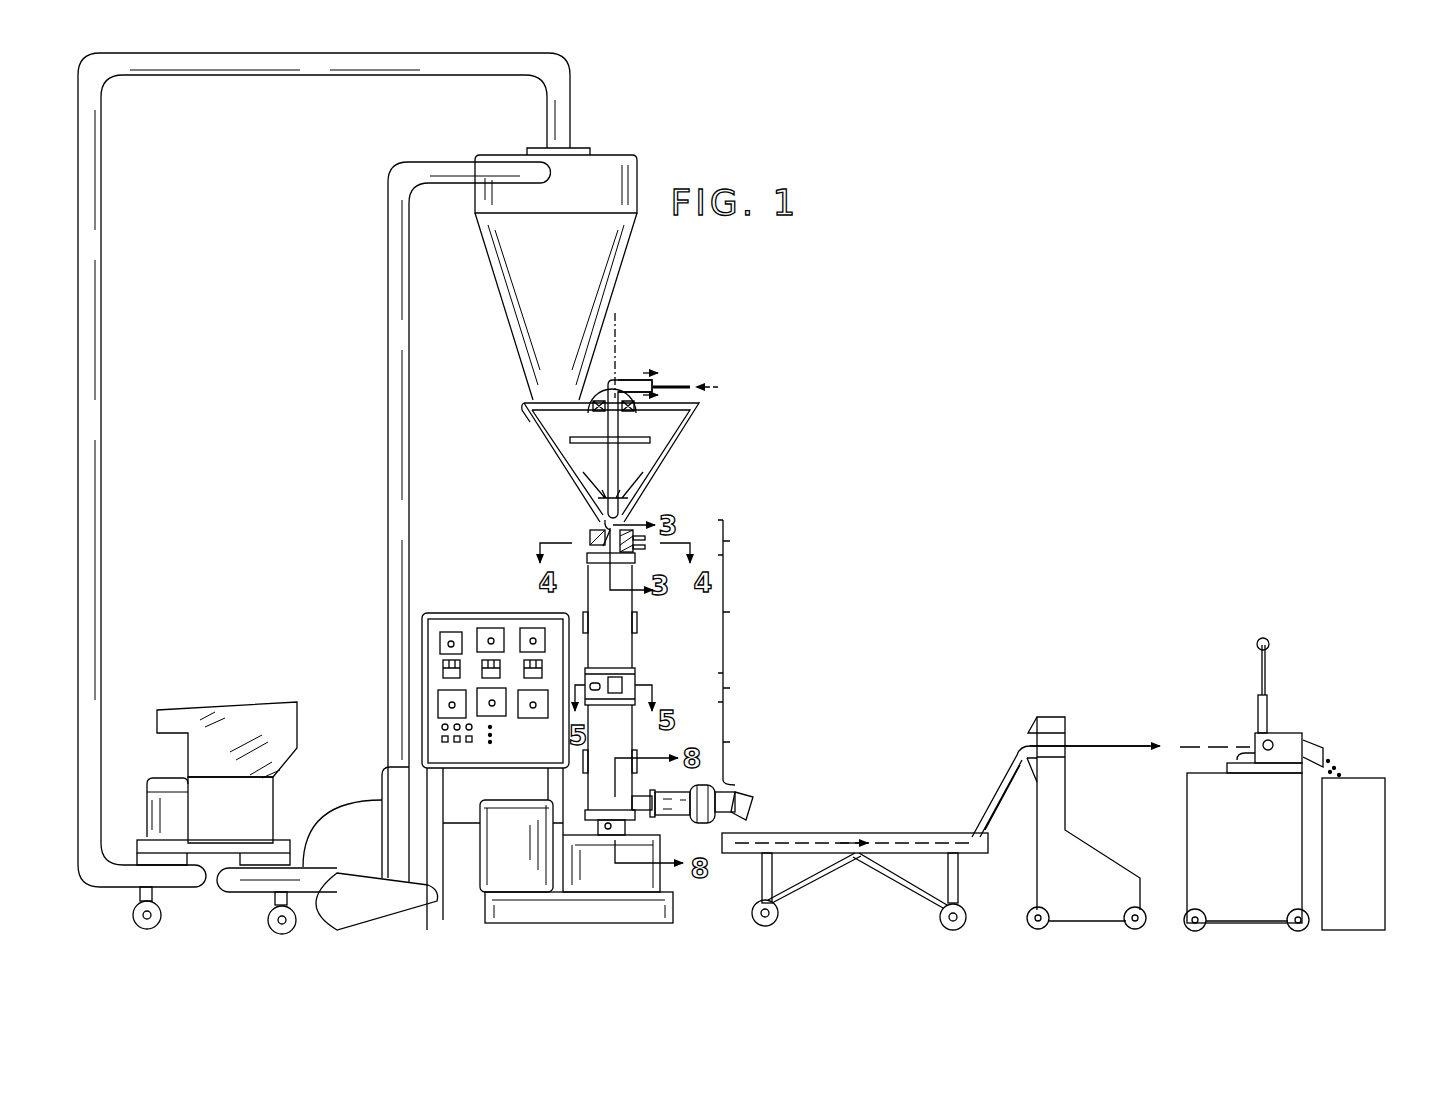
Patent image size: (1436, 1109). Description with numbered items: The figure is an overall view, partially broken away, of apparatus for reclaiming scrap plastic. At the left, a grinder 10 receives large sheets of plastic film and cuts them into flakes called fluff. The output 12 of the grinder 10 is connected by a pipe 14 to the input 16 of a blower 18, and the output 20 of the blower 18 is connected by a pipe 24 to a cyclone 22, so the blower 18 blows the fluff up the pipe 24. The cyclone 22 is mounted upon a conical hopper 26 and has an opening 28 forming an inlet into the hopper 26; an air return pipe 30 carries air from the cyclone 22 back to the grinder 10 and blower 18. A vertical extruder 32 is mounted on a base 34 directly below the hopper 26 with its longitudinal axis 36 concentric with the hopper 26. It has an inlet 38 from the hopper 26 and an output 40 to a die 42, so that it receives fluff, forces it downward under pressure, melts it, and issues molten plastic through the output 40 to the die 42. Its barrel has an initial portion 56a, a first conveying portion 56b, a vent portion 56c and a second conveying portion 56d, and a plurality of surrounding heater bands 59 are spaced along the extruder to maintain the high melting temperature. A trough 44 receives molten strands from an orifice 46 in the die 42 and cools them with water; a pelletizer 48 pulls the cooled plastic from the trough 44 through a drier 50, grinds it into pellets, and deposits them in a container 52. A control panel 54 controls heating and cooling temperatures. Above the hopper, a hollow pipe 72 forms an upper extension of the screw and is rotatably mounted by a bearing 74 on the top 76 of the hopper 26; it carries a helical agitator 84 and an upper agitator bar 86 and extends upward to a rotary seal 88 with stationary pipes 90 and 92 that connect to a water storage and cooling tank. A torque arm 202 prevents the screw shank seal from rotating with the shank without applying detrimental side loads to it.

The grinder 10 is at (230, 703).
The output of grinder 12 is at (237, 852).
The pipe 14 is at (252, 880).
The input of blower 16 is at (350, 908).
The blower 18 is at (325, 814).
The output of blower 20 is at (383, 767).
The cyclone 22 is at (475, 212).
The pipe 24 is at (388, 308).
The conical hopper 26 is at (556, 452).
The opening 28 is at (530, 414).
The air return pipe 30 is at (327, 80).
The vertical extruder 32 is at (646, 661).
The base 34 is at (664, 870).
The longitudinal axis 36 is at (617, 318).
The inlet 38 is at (592, 543).
The output 40 is at (645, 815).
The die 42 is at (680, 793).
The trough 44 is at (812, 833).
The orifice 46 is at (743, 814).
The pelletizer 48 is at (1290, 737).
The drier 50 is at (1055, 717).
The container 52 is at (1368, 778).
The control panel 54 is at (485, 613).
The initial barrel portion 56a is at (745, 652).
The first conveying portion 56b is at (755, 611).
The vent portion 56c is at (755, 687).
The second conveying portion 56d is at (755, 743).
The heater bands 59 is at (637, 628).
The hollow pipe 72 is at (615, 478).
The bearing 74 is at (636, 410).
The top of hopper 76 is at (575, 404).
The helical agitator 84 is at (626, 504).
The upper agitator bar 86 is at (650, 440).
The rotary seal 88 is at (600, 404).
The stationary pipe 90 is at (640, 380).
The stationary pipe 92 is at (683, 382).
The torque arm 202 is at (463, 830).